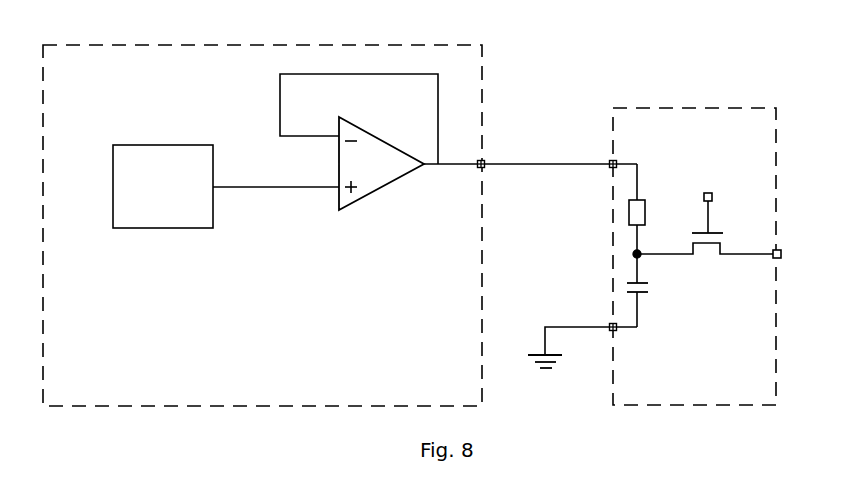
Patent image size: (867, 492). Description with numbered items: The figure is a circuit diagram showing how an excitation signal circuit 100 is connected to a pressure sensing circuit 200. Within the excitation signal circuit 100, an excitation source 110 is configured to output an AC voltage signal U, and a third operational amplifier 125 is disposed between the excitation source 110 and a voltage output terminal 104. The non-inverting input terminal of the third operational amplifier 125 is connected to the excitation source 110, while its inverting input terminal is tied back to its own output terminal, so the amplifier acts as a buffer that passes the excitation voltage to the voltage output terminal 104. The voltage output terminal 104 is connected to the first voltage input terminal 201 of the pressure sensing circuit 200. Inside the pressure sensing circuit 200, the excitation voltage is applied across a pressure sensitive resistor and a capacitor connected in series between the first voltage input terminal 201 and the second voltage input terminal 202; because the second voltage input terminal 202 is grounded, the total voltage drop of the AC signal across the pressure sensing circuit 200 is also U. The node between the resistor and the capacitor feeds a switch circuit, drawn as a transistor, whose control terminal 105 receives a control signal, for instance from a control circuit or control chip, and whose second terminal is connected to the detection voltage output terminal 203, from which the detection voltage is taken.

The excitation signal circuit 100 is at (248, 46).
The excitation source 110 is at (163, 186).
The third operational amplifier 125 is at (381, 193).
The voltage output terminal 104 is at (487, 157).
The pressure sensing circuit 200 is at (688, 108).
The first voltage input terminal 201 is at (608, 170).
The second voltage input terminal 202 is at (607, 320).
The control terminal 105 is at (712, 189).
The detection voltage output terminal 203 is at (787, 250).